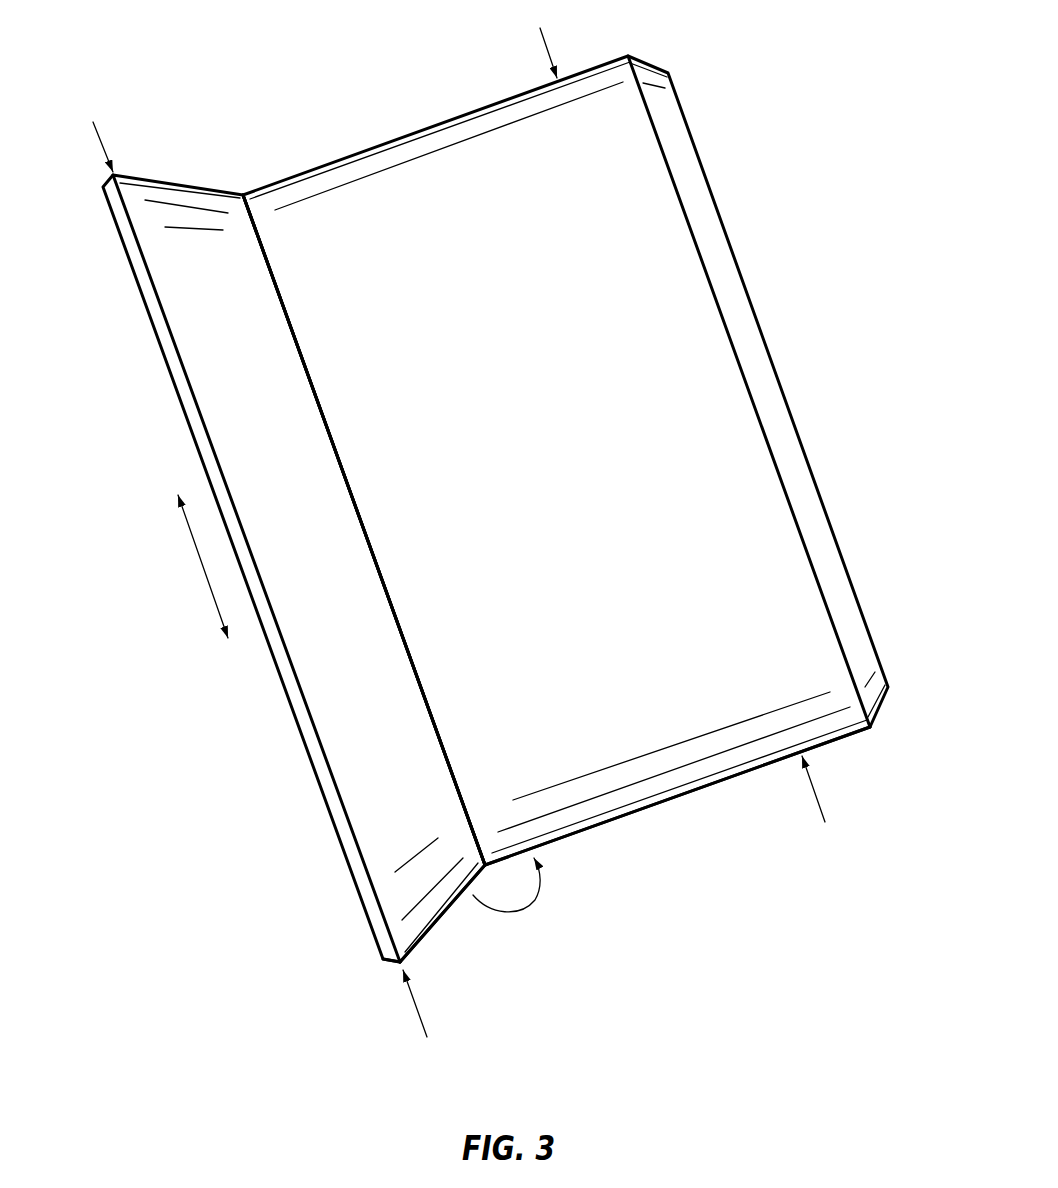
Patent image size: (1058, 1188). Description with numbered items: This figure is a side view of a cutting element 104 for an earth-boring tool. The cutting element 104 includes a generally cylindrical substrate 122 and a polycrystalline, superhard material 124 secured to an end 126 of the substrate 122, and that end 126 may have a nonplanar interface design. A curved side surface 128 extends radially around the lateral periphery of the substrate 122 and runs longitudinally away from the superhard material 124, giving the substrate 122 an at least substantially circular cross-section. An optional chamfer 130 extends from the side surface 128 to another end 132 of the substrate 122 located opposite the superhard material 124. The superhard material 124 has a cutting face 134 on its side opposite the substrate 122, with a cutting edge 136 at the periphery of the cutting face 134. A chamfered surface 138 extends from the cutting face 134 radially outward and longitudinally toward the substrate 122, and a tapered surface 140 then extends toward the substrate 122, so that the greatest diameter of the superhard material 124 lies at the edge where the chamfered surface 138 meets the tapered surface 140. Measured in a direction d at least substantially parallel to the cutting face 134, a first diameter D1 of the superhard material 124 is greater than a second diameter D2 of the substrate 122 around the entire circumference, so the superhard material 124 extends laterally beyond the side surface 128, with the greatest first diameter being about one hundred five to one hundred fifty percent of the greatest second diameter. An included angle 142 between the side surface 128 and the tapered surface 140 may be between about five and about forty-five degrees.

The cutting element 104 is at (248, 172).
The substrate 122 is at (447, 182).
The polycrystalline, superhard material 124 is at (345, 695).
The end of the substrate 126 is at (444, 758).
The curved side surface 128 is at (695, 795).
The chamfer 130 is at (888, 701).
The end of the substrate 132 is at (820, 472).
The cutting face 134 is at (176, 405).
The cutting edge 136 is at (102, 188).
The chamfered surface 138 is at (386, 968).
The tapered surface 140 is at (443, 896).
The angle 142 is at (535, 900).
The direction d is at (196, 567).
The first diameter D1 is at (415, 1003).
The second diameter D2 is at (818, 800).